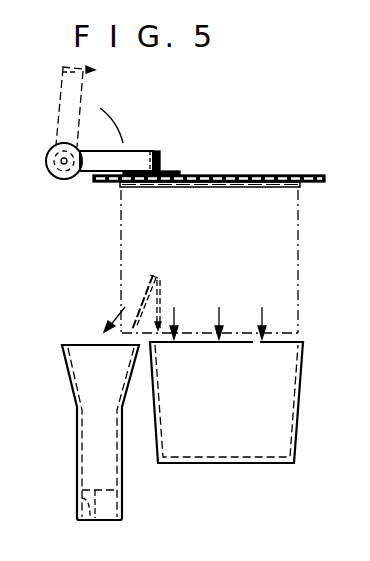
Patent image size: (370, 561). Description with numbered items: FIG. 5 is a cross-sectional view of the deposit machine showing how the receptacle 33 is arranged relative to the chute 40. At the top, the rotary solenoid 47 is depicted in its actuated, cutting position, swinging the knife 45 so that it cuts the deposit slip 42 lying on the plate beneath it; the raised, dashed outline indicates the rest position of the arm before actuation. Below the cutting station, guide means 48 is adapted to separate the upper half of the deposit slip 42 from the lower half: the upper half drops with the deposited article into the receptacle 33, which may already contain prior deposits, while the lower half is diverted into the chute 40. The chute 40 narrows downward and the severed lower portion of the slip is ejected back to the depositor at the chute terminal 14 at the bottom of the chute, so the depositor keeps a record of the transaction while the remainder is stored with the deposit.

The chute terminal 14 is at (95, 519).
The receptacle 33 is at (288, 417).
The chute 40 is at (88, 449).
The deposit slip 42 is at (180, 173).
The knife 45 is at (162, 167).
The rotary solenoid 47 is at (60, 174).
The guide means 48 is at (158, 277).